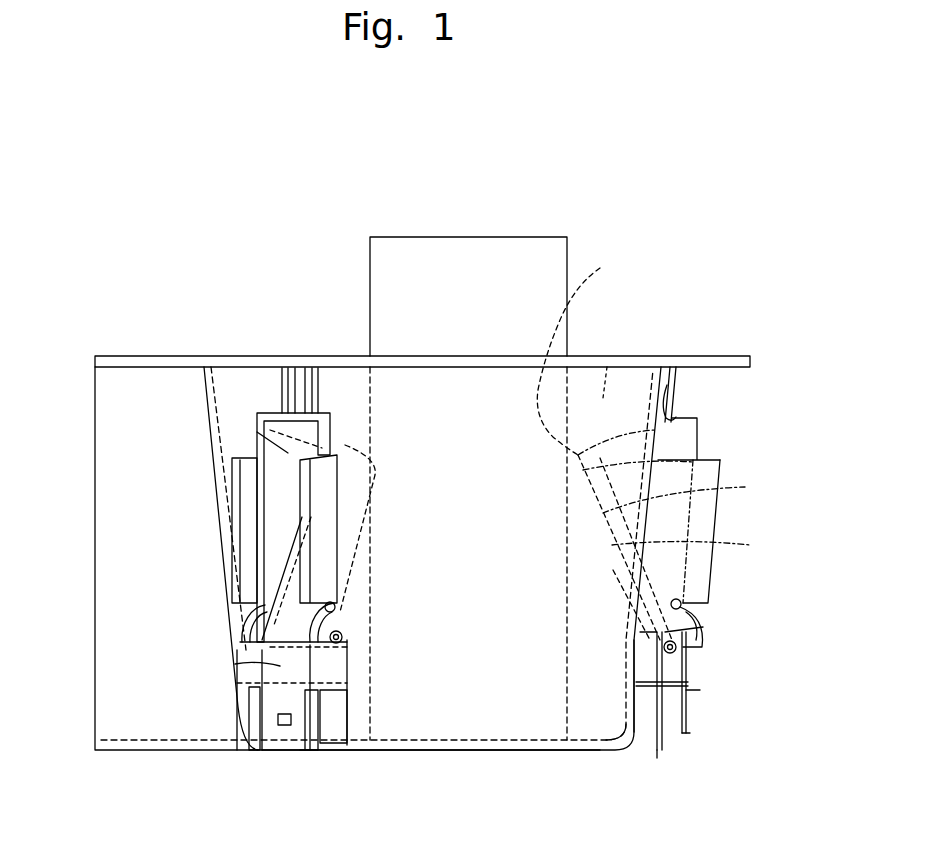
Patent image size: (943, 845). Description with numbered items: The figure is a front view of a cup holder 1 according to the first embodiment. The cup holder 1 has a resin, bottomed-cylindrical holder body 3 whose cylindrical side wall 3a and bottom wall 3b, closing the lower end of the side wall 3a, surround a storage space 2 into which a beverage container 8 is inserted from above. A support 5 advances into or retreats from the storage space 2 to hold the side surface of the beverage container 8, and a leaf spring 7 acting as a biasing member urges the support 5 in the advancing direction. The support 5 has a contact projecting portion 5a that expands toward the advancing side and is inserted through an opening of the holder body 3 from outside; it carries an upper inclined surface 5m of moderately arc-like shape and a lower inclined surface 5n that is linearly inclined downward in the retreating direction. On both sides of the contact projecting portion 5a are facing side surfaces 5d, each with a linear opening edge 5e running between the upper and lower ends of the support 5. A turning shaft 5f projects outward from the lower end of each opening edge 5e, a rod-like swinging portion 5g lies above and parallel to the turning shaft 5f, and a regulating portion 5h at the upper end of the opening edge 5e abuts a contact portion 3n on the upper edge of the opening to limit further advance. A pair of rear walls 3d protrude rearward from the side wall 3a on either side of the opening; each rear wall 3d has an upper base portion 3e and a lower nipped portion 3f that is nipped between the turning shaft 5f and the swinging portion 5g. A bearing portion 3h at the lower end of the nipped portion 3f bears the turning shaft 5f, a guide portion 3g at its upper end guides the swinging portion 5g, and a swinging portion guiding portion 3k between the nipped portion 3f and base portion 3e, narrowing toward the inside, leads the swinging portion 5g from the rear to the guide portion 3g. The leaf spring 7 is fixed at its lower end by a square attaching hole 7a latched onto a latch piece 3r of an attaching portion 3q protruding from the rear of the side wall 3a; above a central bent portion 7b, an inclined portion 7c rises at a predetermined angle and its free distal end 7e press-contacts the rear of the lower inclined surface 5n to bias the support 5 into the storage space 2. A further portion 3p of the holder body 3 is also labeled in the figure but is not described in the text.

The cup holder 1 is at (660, 297).
The storage space 2 is at (607, 367).
The holder body 3 is at (732, 354).
The side wall 3a is at (630, 745).
The bottom wall 3b is at (490, 755).
The rear wall 3d is at (247, 525).
The base portion 3e is at (700, 510).
The nipped portion 3f is at (342, 627).
The guide portion 3g is at (705, 650).
The bearing portion 3h is at (637, 749).
The swinging portion guiding portion 3k is at (700, 612).
The contact portion 3n is at (283, 383).
The support leg 3p is at (664, 732).
The attaching portion 3q is at (285, 742).
The latch piece 3r is at (280, 722).
The support 5 is at (324, 412).
The contact projecting portion 5a is at (506, 447).
The side surface 5d is at (280, 452).
The opening edge 5e is at (247, 563).
The turning shaft 5f is at (352, 640).
The swinging portion 5g is at (336, 604).
The regulating portion 5h is at (673, 398).
The upper inclined surface 5m is at (628, 425).
The lower inclined surface 5n is at (700, 490).
The leaf spring 7 is at (238, 655).
The attaching hole 7a is at (690, 708).
The bent portion 7b is at (700, 640).
The inclined portion 7c is at (705, 520).
The distal end 7e is at (714, 458).
The beverage container 8 is at (567, 245).